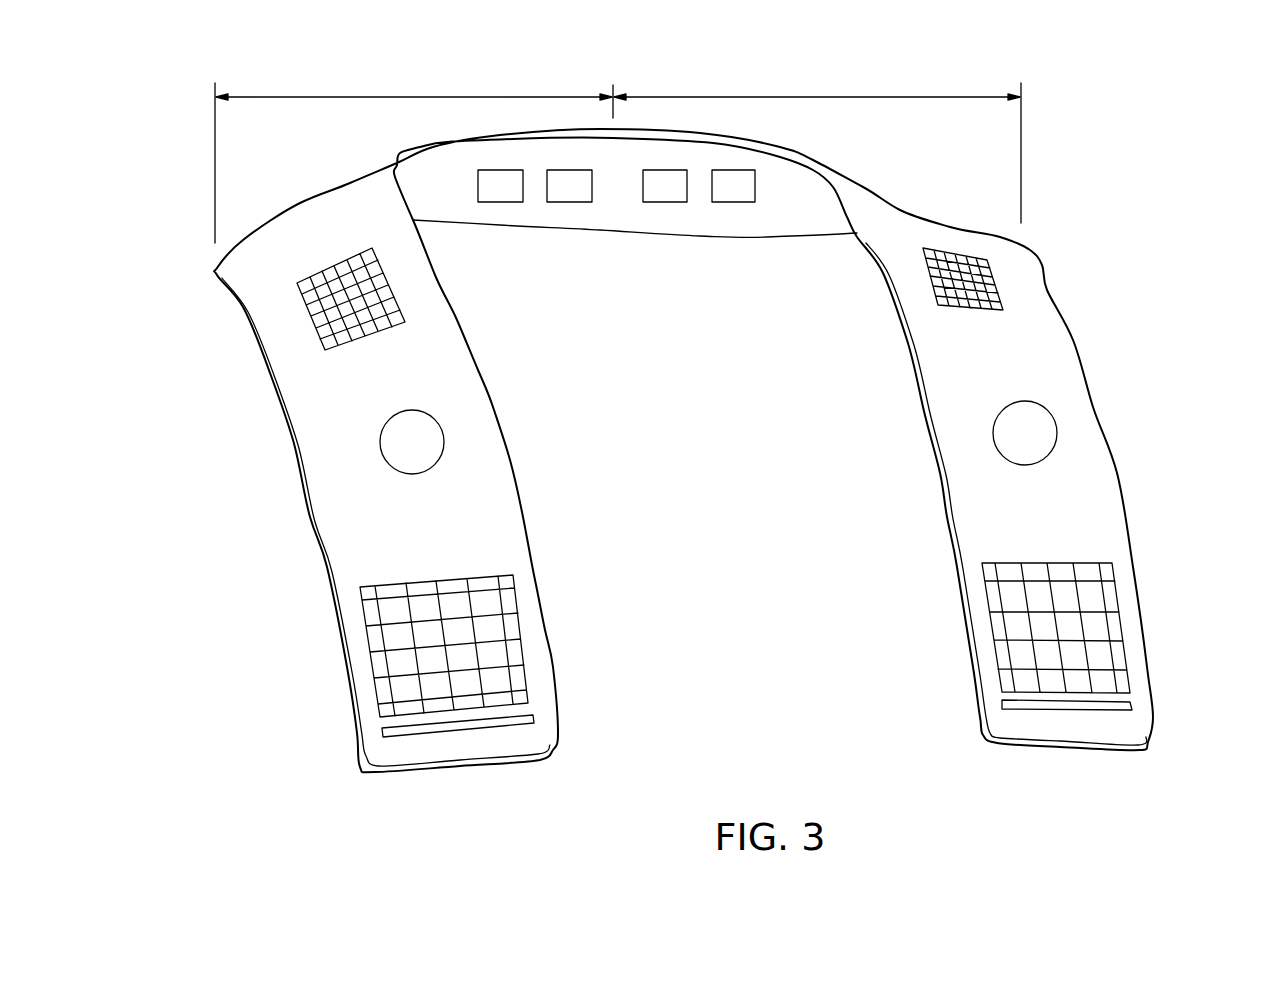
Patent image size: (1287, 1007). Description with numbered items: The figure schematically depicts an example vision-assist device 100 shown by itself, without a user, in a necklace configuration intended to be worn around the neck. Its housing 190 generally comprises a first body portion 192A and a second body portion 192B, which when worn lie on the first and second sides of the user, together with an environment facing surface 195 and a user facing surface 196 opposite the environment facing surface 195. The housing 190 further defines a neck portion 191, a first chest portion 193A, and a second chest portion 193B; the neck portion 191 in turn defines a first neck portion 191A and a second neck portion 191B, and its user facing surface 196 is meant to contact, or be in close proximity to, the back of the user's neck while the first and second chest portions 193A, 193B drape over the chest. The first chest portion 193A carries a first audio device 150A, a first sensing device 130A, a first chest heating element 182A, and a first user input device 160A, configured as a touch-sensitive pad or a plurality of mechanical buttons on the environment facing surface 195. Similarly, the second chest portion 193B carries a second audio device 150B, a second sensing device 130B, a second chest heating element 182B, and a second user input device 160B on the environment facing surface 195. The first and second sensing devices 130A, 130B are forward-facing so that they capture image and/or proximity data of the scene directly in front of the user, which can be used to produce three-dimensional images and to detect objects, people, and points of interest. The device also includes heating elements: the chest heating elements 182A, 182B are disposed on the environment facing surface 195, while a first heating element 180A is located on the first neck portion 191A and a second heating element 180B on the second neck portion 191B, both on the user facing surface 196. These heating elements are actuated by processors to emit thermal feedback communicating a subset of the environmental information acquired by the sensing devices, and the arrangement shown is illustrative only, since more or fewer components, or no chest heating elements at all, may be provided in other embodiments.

The vision-assist device 100 is at (700, 450).
The housing 190 is at (1110, 460).
The neck portion 191 is at (617, 139).
The first neck portion 191A is at (393, 95).
The second neck portion 191B is at (790, 95).
The first body portion 192A is at (240, 556).
The second body portion 192B is at (1190, 501).
The first chest portion 193A is at (327, 475).
The second chest portion 193B is at (1037, 350).
The environment facing surface 195 is at (518, 493).
The user facing surface 196 is at (617, 223).
The first audio device 150A is at (307, 322).
The second audio device 150B is at (955, 247).
The first sensing device 130A is at (415, 418).
The second sensing device 130B is at (1010, 418).
The first user input device 160A is at (370, 648).
The second user input device 160B is at (1125, 623).
The first heating element 180A is at (490, 202).
The second heating element 180B is at (657, 202).
The first chest heating element 182A is at (540, 718).
The second chest heating element 182B is at (1003, 701).